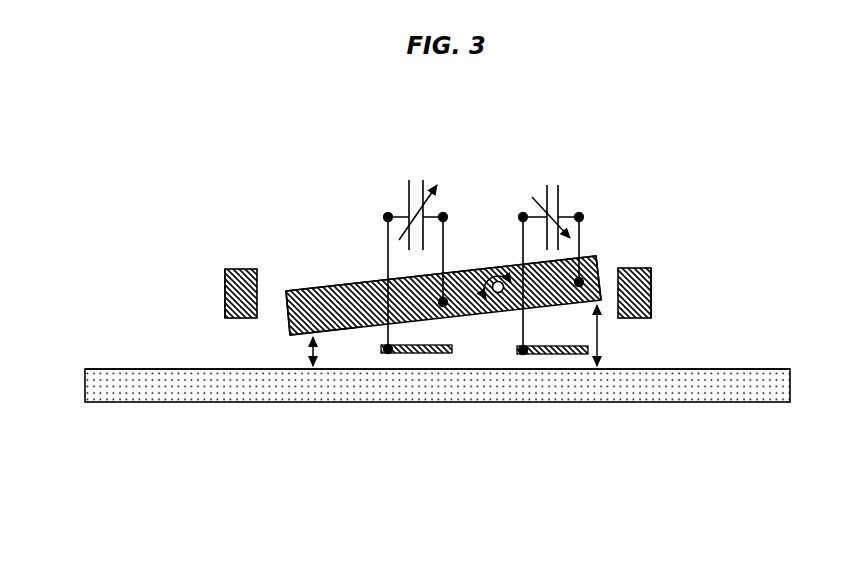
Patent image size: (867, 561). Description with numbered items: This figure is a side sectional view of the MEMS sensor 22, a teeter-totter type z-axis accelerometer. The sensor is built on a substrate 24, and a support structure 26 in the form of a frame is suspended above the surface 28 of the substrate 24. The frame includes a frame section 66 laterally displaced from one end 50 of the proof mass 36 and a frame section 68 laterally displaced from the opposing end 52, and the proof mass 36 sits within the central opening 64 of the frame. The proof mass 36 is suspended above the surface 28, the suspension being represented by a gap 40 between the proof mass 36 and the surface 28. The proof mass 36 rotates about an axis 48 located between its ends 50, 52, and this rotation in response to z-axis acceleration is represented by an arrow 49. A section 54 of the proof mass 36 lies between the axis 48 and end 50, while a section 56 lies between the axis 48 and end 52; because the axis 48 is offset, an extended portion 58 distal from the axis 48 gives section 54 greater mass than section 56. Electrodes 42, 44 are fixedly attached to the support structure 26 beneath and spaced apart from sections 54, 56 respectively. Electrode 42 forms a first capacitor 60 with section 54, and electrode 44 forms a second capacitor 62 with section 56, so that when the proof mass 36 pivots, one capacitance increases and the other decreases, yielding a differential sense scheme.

The MEMS sensor 22 is at (461, 533).
The substrate 24 is at (87, 383).
The support structure 26 is at (226, 271).
The surface 28 is at (146, 352).
The proof mass 36 is at (445, 313).
The gap 40 is at (318, 352).
The electrode 42 is at (417, 353).
The electrode 44 is at (562, 354).
The axis 48 is at (499, 294).
The arrow 49 is at (475, 265).
The end 50 is at (288, 316).
The end 52 is at (600, 278).
The section 54 is at (380, 277).
The section 56 is at (577, 335).
The extended portion 58 is at (308, 318).
The capacitor 60 is at (393, 197).
The capacitor 62 is at (573, 202).
The central opening 64 is at (268, 280).
The frame section 66 is at (223, 288).
The frame section 68 is at (637, 287).